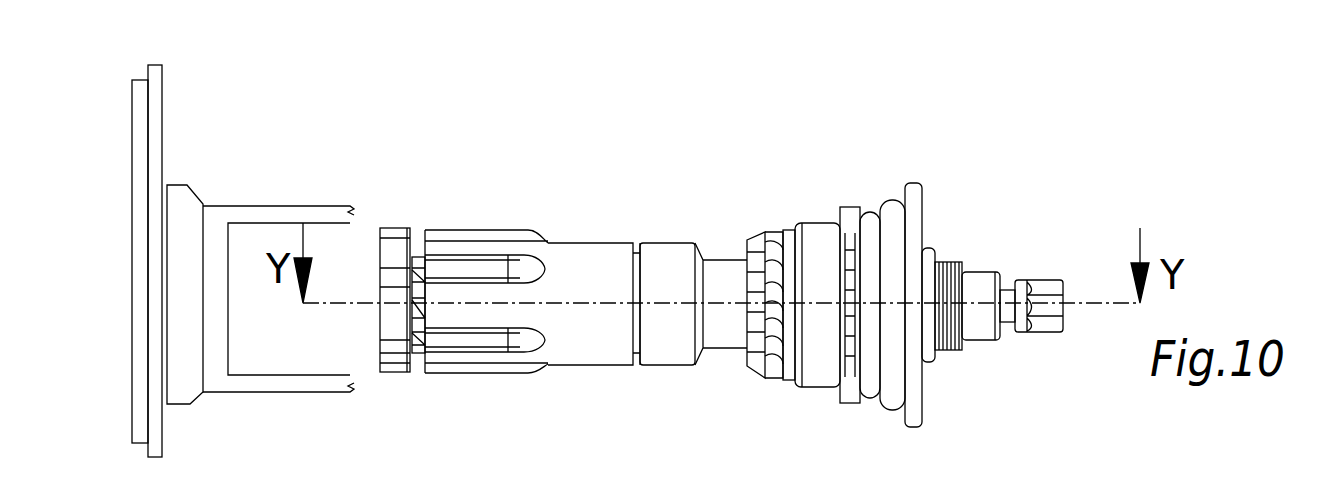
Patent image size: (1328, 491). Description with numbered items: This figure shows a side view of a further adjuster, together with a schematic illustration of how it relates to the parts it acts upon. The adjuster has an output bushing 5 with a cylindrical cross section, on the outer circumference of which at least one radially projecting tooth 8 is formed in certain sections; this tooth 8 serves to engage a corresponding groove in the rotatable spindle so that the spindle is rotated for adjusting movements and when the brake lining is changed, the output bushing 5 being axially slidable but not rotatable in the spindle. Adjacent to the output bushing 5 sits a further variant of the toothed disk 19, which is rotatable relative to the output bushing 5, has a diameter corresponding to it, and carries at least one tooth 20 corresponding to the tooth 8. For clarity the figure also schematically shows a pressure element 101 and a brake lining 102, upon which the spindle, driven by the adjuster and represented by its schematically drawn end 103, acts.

The output bushing 5 is at (593, 265).
The tooth 8 is at (497, 378).
The toothed disk 19 is at (394, 253).
The tooth 20 is at (395, 375).
The pressure element 101 is at (185, 203).
The brake lining 102 is at (158, 92).
The end 103 is at (282, 212).